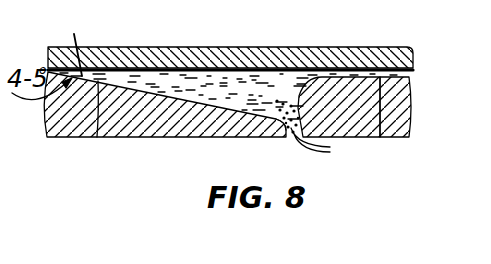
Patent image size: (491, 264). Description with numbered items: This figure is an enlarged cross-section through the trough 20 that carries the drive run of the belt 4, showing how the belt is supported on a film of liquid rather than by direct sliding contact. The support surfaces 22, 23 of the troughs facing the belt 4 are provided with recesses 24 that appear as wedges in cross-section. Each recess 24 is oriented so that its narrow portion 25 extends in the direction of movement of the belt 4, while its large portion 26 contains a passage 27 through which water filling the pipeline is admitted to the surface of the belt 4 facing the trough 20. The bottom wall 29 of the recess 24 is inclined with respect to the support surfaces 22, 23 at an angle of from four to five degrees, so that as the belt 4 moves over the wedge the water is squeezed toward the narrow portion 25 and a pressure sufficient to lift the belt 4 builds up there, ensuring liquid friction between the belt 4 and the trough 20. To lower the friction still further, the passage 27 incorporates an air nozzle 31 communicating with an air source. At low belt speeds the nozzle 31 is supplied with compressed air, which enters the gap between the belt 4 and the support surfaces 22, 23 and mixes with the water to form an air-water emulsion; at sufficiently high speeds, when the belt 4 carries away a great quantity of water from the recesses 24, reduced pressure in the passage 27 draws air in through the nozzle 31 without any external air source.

The belt 4 is at (390, 48).
The trough 20 is at (140, 119).
The support surface 22 is at (381, 137).
The support surface 23 is at (414, 124).
The recess 24 is at (255, 90).
The narrow portion 25 is at (194, 69).
The large portion 26 is at (302, 84).
The passage 27 is at (286, 132).
The bottom wall 29 is at (93, 137).
The air nozzle 31 is at (313, 152).